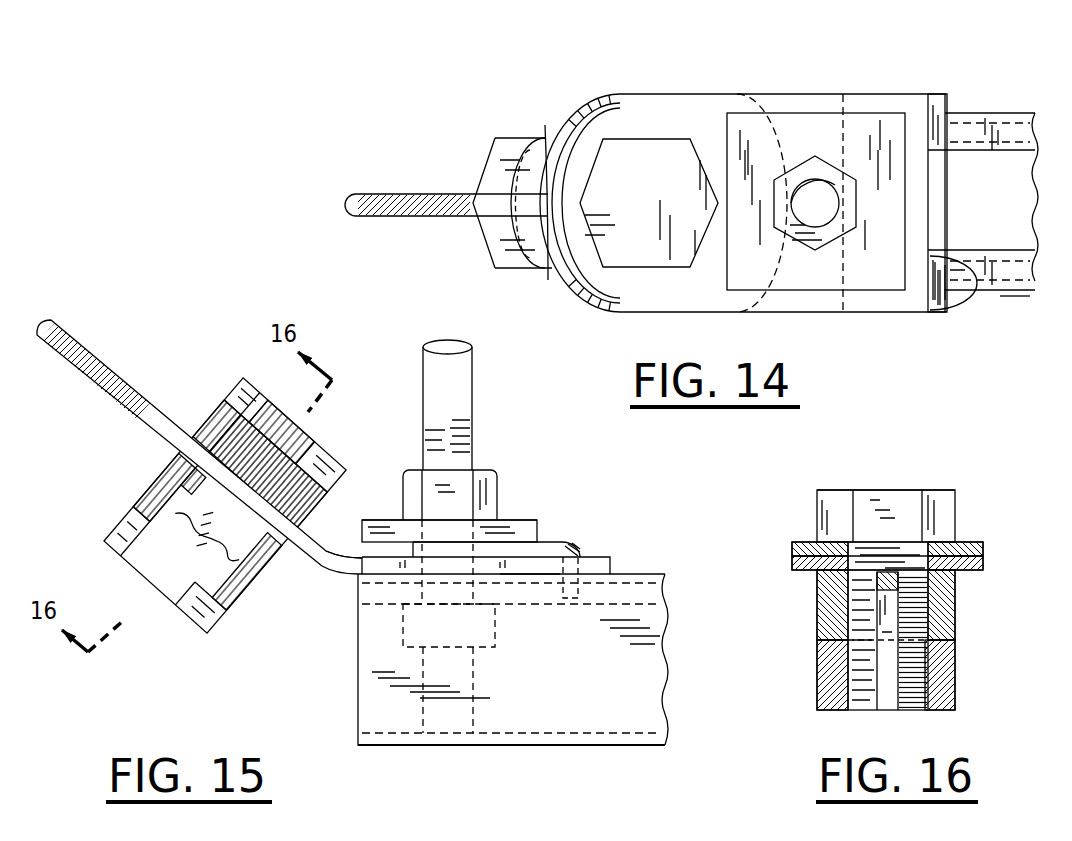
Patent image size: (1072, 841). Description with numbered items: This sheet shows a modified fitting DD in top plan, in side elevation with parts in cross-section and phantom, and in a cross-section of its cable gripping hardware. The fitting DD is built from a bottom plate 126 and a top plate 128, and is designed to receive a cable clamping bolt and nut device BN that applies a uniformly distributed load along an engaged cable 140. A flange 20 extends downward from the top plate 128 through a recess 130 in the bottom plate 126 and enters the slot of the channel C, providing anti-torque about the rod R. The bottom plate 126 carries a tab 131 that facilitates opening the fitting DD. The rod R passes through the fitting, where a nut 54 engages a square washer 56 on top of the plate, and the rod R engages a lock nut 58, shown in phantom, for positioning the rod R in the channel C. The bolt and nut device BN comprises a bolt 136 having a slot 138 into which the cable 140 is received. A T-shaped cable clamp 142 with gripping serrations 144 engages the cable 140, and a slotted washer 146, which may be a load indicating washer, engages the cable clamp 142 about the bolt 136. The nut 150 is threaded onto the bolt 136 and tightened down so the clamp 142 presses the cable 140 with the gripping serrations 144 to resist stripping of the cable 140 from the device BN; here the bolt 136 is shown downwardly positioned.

In FIG. 14, the cable 140 is at (394, 198).
In FIG. 15, the cable 140 is at (82, 340).
In FIG. 16, the cable 140 is at (957, 590).
In FIG. 14, the nut 150 is at (496, 245).
In FIG. 15, the nut 150 is at (123, 537).
In FIG. 16, the nut 150 is at (950, 672).
In FIG. 14, the bolt 136 is at (670, 157).
In FIG. 16, the bolt 136 is at (947, 503).
In FIG. 15, the washer 146 is at (163, 487).
In FIG. 16, the washer 146 is at (950, 625).
In FIG. 15, the T-shaped cable clamp 142 is at (187, 547).
In FIG. 16, the T-shaped cable clamp 142 is at (878, 682).
In FIG. 15, the gripping serrations 144 is at (273, 552).
In FIG. 16, the slot 138 is at (878, 597).
In FIG. 14, the square washer 56 is at (805, 120).
In FIG. 15, the square washer 56 is at (513, 527).
In FIG. 14, the nut 54 is at (823, 257).
In FIG. 15, the nut 54 is at (403, 487).
In FIG. 15, the top plate 128 is at (547, 543).
In FIG. 14, the tab 131 is at (960, 312).
In FIG. 15, the tab 131 is at (598, 557).
In FIG. 14, the recess 130 is at (932, 177).
In FIG. 15, the bottom plate 126 is at (530, 574).
In FIG. 15, the lock nut 58 is at (496, 645).
In FIG. 14, the flange 20 is at (948, 216).
In FIG. 15, the flange 20 is at (610, 590).
In FIG. 14, the cable clamping bolt and nut device BN is at (544, 126).
In FIG. 15, the cable clamping bolt and nut device BN is at (202, 380).
In FIG. 16, the cable clamping bolt and nut device BN is at (886, 480).
In FIG. 14, the fitting DD is at (893, 92).
In FIG. 15, the fitting DD is at (517, 457).
In FIG. 14, the rod R is at (824, 216).
In FIG. 15, the rod R is at (421, 378).
In FIG. 14, the channel C is at (1010, 294).
In FIG. 15, the channel C is at (621, 678).